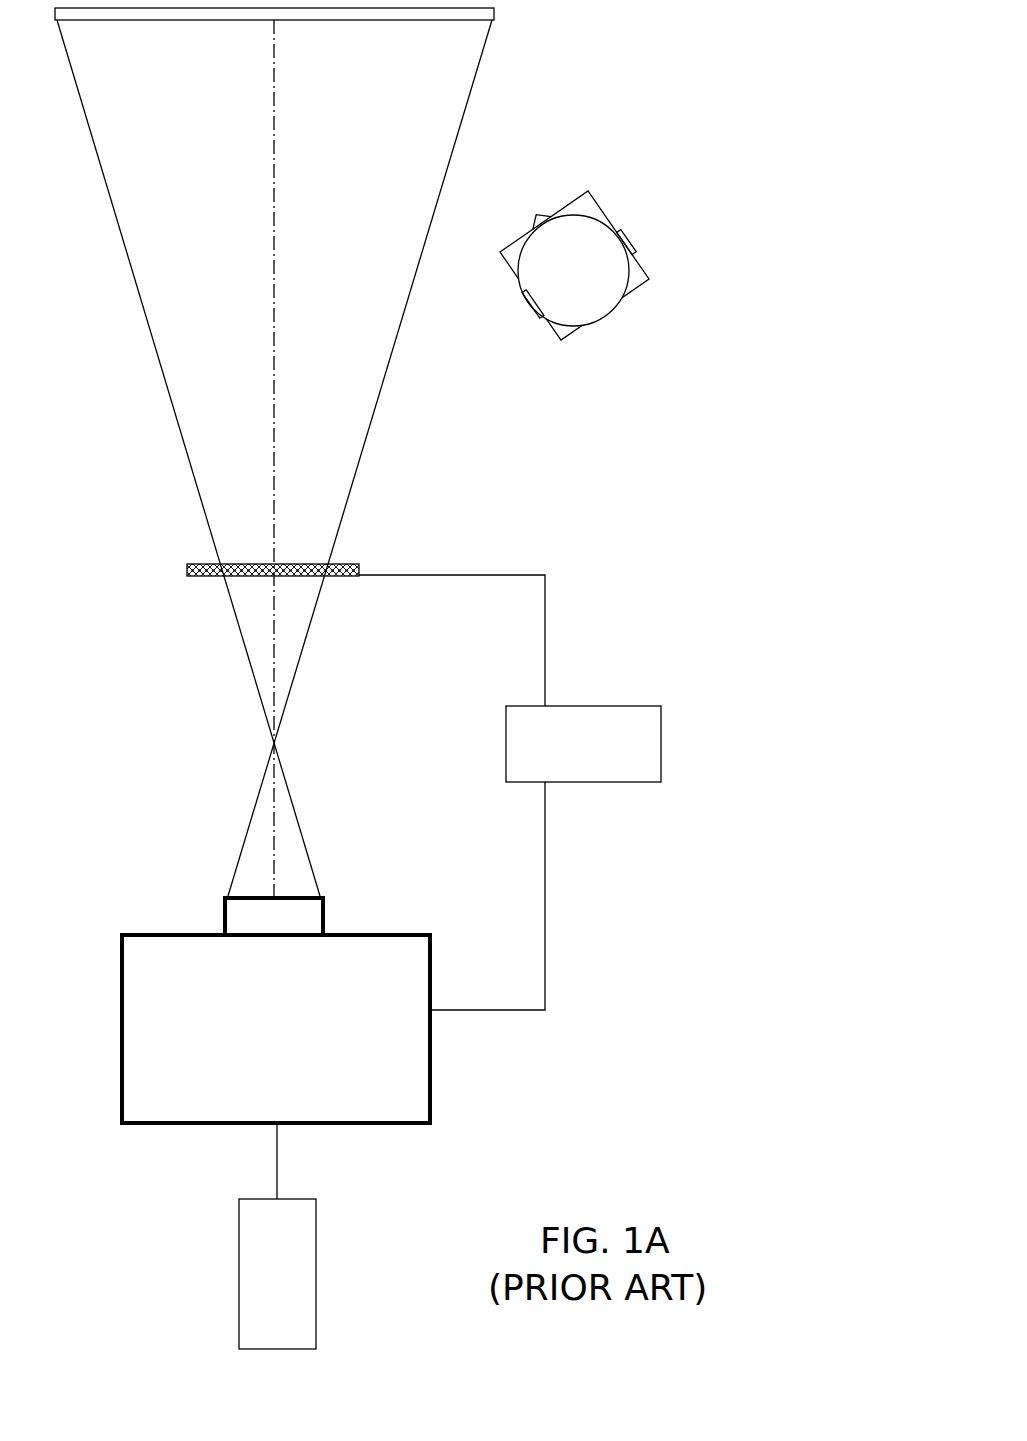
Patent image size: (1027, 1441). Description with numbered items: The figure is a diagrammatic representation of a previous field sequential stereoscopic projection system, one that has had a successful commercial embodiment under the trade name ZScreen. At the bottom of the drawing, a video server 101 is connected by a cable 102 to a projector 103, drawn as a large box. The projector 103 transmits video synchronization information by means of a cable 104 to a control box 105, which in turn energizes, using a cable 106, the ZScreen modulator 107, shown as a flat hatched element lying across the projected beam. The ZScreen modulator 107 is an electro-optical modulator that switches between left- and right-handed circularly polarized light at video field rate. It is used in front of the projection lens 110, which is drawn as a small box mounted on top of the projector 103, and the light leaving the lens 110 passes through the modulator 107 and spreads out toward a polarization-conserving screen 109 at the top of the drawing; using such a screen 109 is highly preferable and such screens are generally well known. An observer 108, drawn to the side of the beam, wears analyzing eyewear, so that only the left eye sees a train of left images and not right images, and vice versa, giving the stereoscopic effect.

The video server 101 is at (277, 1274).
The cable 102 is at (275, 1180).
The projector 103 is at (276, 1029).
The cable 104 is at (488, 896).
The control box 105 is at (583, 744).
The cable 106 is at (452, 640).
The ZScreen modulator 107 is at (221, 577).
The observer 108 is at (610, 319).
The polarization-conserving screen 109 is at (313, 26).
The projection lens 110 is at (223, 917).